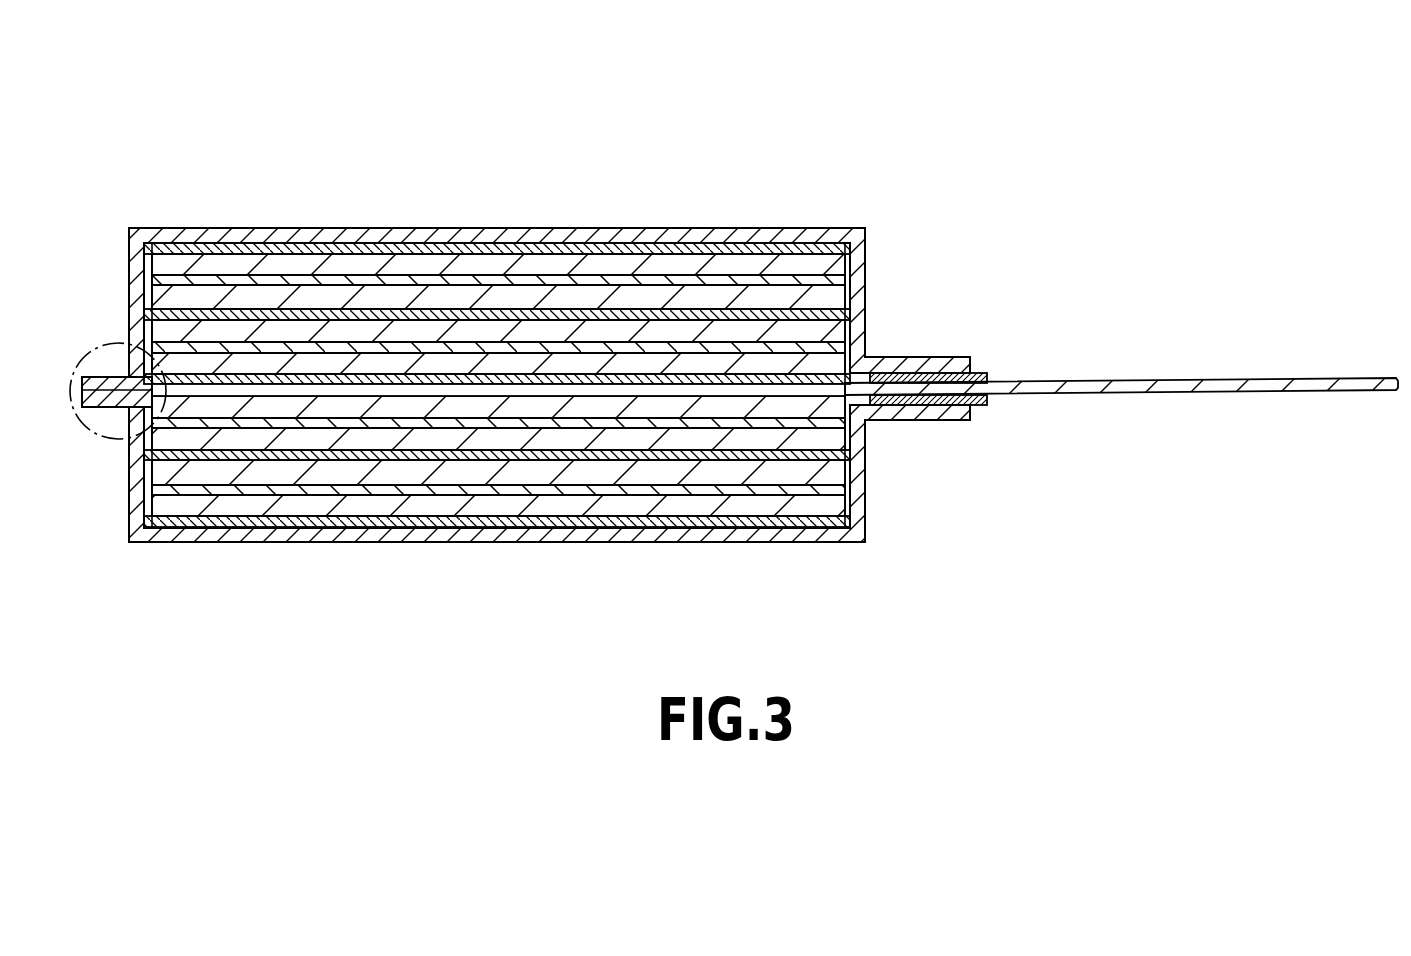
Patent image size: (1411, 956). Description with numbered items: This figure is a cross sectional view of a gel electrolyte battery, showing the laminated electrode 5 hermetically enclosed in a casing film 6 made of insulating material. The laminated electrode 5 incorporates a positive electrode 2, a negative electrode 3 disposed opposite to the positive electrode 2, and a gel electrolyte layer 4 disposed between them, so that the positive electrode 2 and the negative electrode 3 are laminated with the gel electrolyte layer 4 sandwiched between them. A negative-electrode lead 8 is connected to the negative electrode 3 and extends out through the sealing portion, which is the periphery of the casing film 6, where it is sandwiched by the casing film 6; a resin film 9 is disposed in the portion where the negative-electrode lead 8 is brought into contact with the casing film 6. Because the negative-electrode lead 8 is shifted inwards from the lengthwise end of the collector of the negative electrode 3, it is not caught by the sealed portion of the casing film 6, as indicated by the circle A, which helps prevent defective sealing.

The positive electrode 2 is at (265, 283).
The negative electrode 3 is at (395, 250).
The gel electrolyte layer 4 is at (332, 265).
The laminated electrode 5 is at (599, 120).
The casing film 6 is at (738, 227).
The negative-electrode lead 8 is at (1229, 378).
The resin film 9 is at (988, 372).
The circle A is at (106, 345).